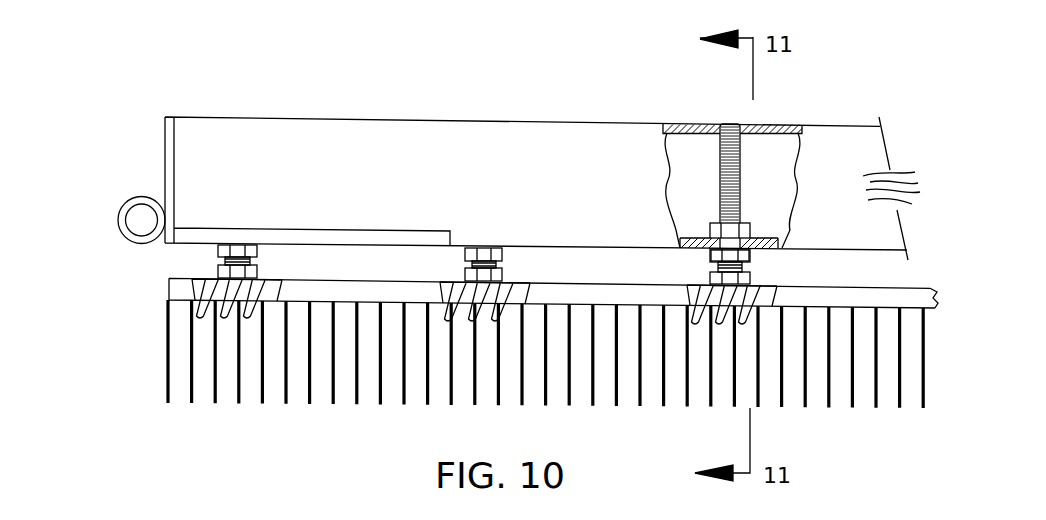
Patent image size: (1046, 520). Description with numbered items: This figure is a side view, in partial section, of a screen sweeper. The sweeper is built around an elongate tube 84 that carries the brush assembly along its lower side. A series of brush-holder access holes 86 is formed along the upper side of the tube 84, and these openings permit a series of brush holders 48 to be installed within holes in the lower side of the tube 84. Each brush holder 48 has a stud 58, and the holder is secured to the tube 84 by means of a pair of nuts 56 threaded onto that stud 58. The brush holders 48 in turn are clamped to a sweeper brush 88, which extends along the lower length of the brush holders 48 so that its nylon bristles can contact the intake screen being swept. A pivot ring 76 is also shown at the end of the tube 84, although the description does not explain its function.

The elongate tube 84 is at (340, 118).
The pivot pin 76 is at (137, 200).
The brush holder 48 is at (192, 277).
The sweeper brush 88 is at (168, 385).
The stud 58 is at (730, 160).
The brush-holder access hole 86 is at (713, 123).
The nut 56 is at (747, 257).